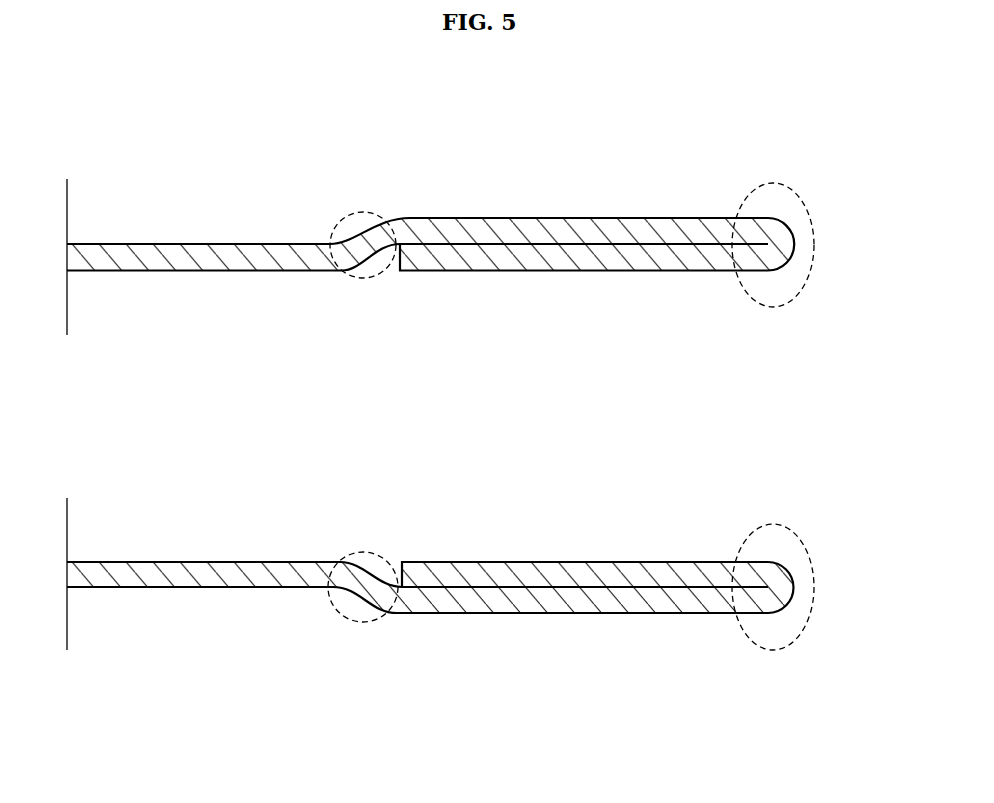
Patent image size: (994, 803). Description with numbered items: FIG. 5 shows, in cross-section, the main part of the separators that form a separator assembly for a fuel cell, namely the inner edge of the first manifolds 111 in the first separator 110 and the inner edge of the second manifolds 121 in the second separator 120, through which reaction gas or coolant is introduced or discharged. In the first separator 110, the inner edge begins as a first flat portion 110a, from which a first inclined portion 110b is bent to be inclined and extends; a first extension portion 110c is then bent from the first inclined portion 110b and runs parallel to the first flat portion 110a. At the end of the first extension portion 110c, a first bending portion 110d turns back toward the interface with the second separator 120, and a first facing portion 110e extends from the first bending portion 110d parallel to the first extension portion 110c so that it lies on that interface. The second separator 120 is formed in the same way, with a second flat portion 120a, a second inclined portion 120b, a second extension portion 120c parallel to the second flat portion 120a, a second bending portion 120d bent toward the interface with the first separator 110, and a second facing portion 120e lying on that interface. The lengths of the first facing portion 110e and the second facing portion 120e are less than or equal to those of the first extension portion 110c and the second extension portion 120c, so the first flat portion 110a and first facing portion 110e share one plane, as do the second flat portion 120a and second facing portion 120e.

The first separator 110 is at (669, 203).
The first flat portion 110a is at (232, 246).
The first inclined portion 110b is at (363, 212).
The first extension portion 110c is at (578, 232).
The first bending portion 110d is at (773, 183).
The first facing portion 110e is at (557, 258).
The first manifolds 111 is at (872, 240).
The second separator 120 is at (551, 542).
The second flat portion 120a is at (190, 577).
The second inclined portion 120b is at (363, 552).
The second extension portion 120c is at (578, 605).
The second bending portion 120d is at (773, 524).
The second facing portion 120e is at (635, 572).
The second manifolds 121 is at (866, 596).